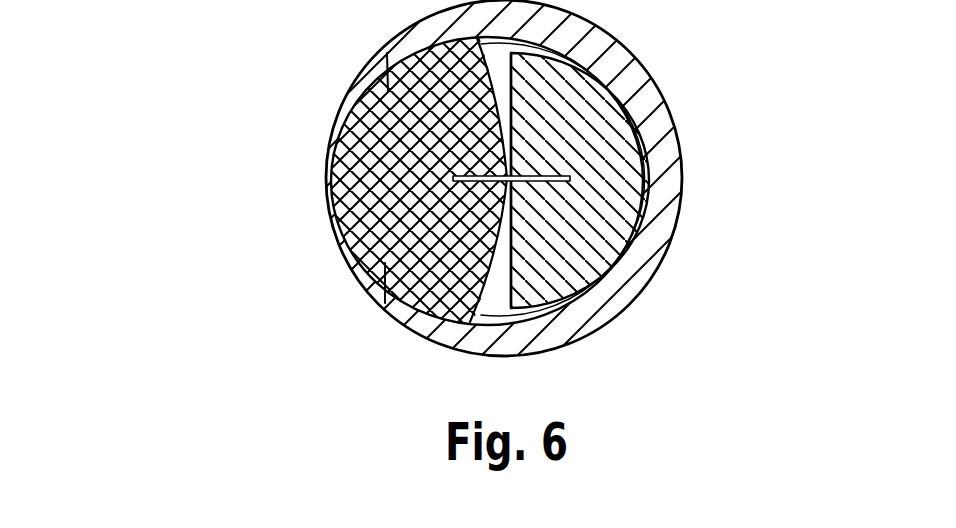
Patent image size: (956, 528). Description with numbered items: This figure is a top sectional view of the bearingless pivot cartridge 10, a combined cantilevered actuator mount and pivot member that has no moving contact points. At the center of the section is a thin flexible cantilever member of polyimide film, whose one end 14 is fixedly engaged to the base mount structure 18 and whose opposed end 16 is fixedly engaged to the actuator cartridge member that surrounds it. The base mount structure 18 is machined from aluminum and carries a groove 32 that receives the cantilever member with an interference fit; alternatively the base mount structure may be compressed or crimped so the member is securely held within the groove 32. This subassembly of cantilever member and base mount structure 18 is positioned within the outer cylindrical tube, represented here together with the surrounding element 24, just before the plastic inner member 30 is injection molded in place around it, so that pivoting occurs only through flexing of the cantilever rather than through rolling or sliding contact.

The bearingless pivot cartridge 10 is at (247, 125).
The end of flexible cantilever member 14 is at (572, 179).
The opposed end of flexible cantilever member 16 is at (453, 181).
The base mount structure 18 is at (573, 123).
The outer sheath 24 is at (655, 240).
The plastic inner member 30 is at (373, 128).
The groove 32 is at (517, 190).